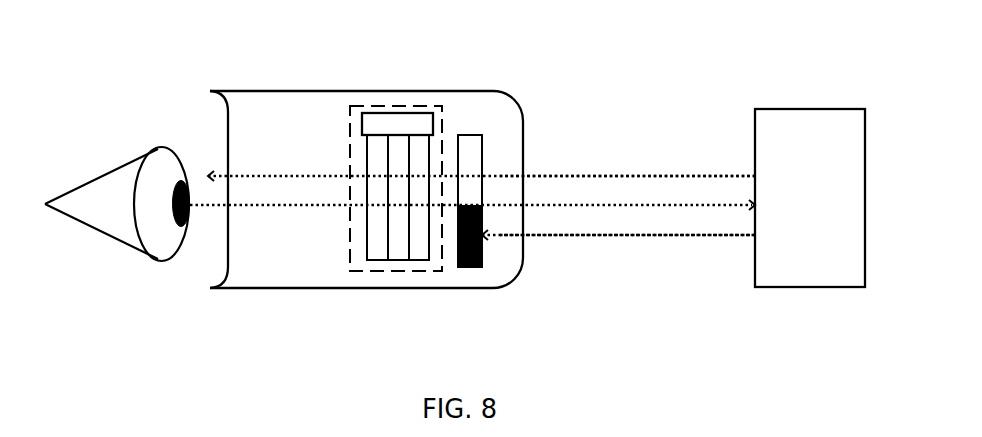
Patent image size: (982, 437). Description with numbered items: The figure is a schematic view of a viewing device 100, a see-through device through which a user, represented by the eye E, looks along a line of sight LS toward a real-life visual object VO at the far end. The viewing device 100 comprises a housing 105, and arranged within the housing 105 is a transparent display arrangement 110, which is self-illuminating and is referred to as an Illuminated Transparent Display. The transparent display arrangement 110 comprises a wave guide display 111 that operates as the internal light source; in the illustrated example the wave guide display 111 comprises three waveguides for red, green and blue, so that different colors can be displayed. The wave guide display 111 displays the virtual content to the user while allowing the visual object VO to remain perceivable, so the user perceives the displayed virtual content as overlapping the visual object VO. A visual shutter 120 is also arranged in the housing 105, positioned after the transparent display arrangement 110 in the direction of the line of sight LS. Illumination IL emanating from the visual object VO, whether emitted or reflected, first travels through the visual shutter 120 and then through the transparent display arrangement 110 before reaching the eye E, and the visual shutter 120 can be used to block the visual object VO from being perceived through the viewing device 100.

The viewing device 100 is at (184, 56).
The housing 105 is at (279, 91).
The transparent display arrangement 110 is at (387, 113).
The wave guide display 111 is at (397, 124).
The visual shutter 120 is at (471, 135).
The eye E is at (117, 200).
The line of sight LS is at (169, 204).
The visual object VO is at (810, 198).
The incident light IL is at (627, 208).